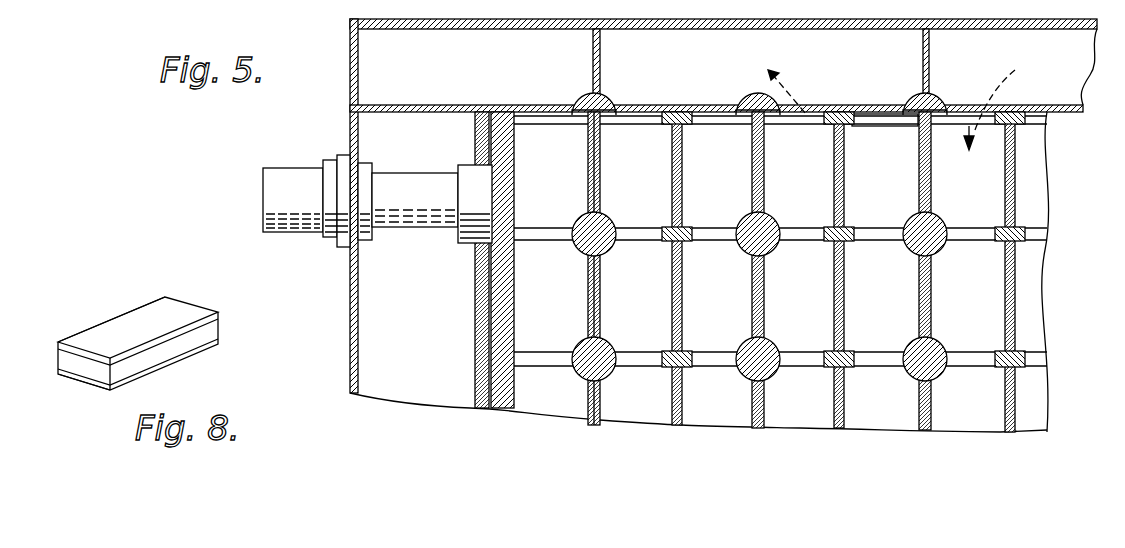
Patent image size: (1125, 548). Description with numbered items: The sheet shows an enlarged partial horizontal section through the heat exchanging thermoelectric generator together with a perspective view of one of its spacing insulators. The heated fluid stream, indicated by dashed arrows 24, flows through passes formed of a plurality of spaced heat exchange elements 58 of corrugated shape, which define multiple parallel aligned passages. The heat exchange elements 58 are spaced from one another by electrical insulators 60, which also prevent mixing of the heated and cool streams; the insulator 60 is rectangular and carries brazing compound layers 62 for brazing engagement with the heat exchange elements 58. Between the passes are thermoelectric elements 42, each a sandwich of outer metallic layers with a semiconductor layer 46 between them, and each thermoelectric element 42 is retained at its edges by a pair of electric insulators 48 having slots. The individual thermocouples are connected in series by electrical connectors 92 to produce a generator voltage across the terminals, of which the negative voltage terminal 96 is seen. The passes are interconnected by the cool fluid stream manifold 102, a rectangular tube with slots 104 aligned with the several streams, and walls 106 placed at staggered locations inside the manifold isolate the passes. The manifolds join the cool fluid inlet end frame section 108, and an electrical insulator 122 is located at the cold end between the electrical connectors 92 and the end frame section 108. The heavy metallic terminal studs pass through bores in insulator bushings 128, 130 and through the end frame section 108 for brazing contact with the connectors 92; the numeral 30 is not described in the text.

In FIG. 5, the heated fluid stream 24 is at (780, 237).
In FIG. 5, the rod 30 is at (683, 162).
In FIG. 5, the thermoelectric element 42 is at (590, 268).
In FIG. 5, the semiconductor layer 46 is at (598, 200).
In FIG. 5, the electric insulator 48 is at (765, 342).
In FIG. 5, the heat exchange element 58 is at (875, 135).
In FIG. 5, the electrical insulator 60 is at (697, 350).
In FIG. 8, the electrical insulator 60 is at (175, 353).
In FIG. 8, the brazing compound layer 62 is at (58, 342).
In FIG. 5, the electrical connector 92 is at (513, 178).
In FIG. 5, the negative voltage terminal 96 is at (267, 195).
In FIG. 5, the cool fluid stream manifold 102 is at (975, 30).
In FIG. 5, the slot 104 is at (958, 122).
In FIG. 5, the wall 106 is at (593, 66).
In FIG. 5, the cool fluid inlet end frame section 108 is at (345, 331).
In FIG. 5, the electrical insulator 122 is at (483, 302).
In FIG. 5, the insulator bushing 128 is at (340, 153).
In FIG. 5, the insulator bushing 130 is at (463, 165).